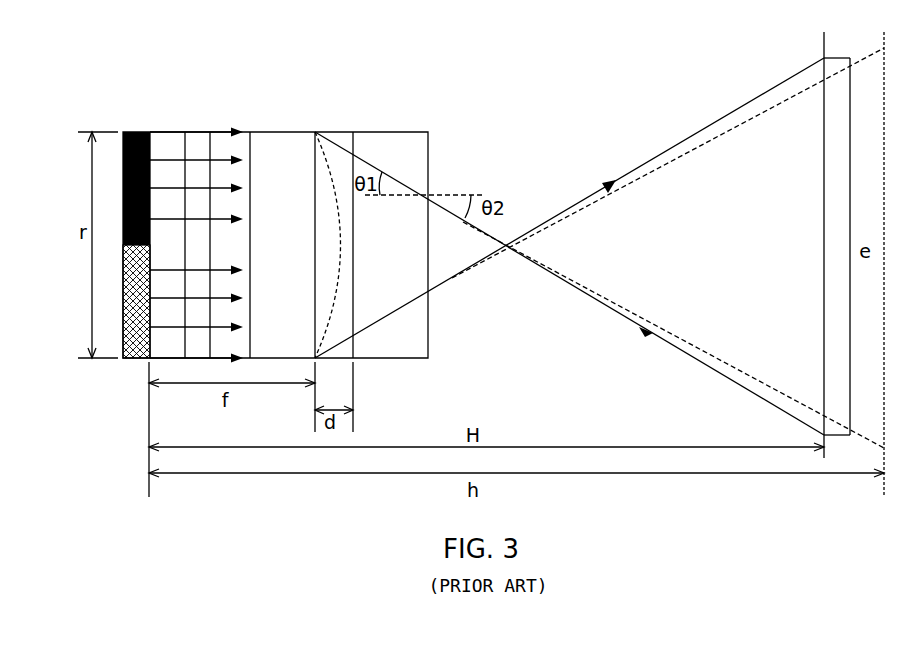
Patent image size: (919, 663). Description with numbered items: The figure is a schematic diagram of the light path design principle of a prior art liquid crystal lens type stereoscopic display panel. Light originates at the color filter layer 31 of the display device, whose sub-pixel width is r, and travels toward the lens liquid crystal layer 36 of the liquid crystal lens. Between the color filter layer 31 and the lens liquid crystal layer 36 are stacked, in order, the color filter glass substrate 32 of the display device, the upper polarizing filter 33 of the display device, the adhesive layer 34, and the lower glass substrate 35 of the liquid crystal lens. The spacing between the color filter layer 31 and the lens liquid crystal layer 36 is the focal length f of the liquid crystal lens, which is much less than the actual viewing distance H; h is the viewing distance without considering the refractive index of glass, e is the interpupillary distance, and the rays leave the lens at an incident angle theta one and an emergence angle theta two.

The color filter layer 31 is at (137, 117).
The color filter glass substrate 32 is at (167, 117).
The upper polarizing filter 33 is at (208, 122).
The adhesive layer 34 is at (238, 122).
The lower glass substrate 35 is at (298, 122).
The lens liquid crystal layer 36 is at (335, 122).